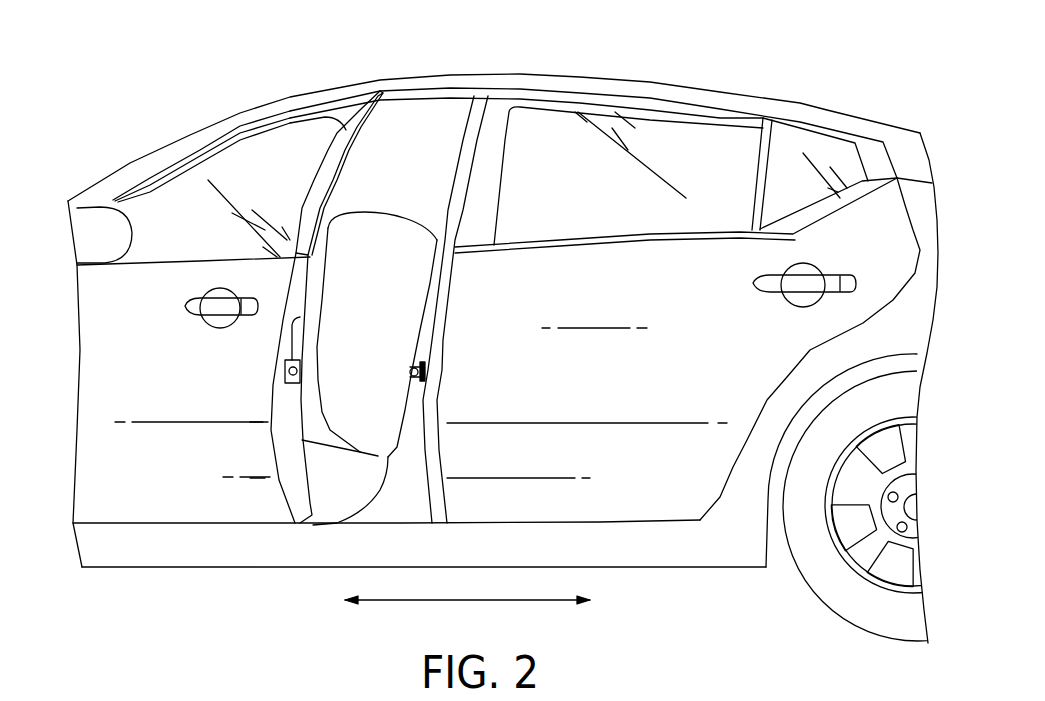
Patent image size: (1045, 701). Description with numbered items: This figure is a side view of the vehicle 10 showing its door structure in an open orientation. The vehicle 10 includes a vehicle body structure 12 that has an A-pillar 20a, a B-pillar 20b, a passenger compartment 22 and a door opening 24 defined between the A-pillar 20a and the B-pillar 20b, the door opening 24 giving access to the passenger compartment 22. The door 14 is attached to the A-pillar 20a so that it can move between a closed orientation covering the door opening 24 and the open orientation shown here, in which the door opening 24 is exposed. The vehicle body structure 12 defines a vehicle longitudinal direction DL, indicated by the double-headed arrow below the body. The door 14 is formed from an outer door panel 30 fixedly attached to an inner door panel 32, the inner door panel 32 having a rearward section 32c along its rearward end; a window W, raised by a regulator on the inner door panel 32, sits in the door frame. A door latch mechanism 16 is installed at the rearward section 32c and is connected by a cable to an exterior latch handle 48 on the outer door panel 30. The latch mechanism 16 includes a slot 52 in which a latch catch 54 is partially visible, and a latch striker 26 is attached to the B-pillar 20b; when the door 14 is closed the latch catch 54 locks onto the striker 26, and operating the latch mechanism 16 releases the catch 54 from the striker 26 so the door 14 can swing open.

The vehicle 10 is at (748, 52).
The vehicle body structure 12 is at (305, 84).
The door 14 is at (157, 482).
The door latch mechanism 16 is at (300, 317).
The A-pillar 20a is at (125, 178).
The B-pillar 20b is at (468, 132).
The passenger compartment 22 is at (396, 140).
The door opening 24 is at (467, 185).
The latch striker 26 is at (420, 384).
The outer door panel 30 is at (130, 367).
The inner door panel 32 is at (302, 410).
The rearward section 32c is at (300, 290).
The exterior latch handle 48 is at (223, 312).
The slot 52 is at (300, 370).
The latch catch 54 is at (283, 380).
The window W is at (177, 210).
The vehicle longitudinal direction DL is at (503, 602).